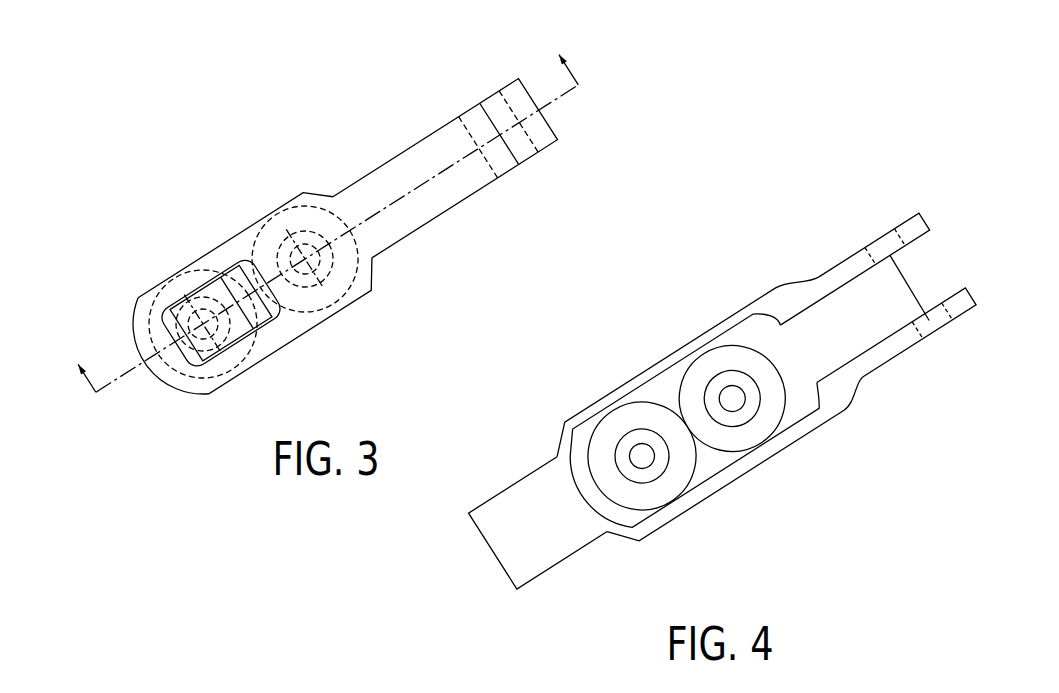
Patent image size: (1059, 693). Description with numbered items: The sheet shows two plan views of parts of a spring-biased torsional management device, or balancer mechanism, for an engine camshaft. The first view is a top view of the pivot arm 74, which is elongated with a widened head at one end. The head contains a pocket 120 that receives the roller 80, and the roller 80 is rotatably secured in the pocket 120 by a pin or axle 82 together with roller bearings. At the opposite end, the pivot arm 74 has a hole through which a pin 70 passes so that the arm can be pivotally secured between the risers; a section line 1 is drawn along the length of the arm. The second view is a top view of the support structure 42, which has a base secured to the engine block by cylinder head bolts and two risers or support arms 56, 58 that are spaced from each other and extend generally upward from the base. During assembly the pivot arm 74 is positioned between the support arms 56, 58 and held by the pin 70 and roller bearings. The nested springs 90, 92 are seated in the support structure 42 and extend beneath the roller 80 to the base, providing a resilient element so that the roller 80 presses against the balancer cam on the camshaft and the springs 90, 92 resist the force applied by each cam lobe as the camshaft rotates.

In FIG. 3, the section line 1- 1 is at (323, 204).
In FIG. 4, the support structure 42 is at (575, 537).
In FIG. 4, the support arm 56 is at (838, 262).
In FIG. 4, the support arm 58 is at (913, 347).
In FIG. 3, the pin 70 is at (518, 163).
In FIG. 3, the pivot arm 74 is at (402, 167).
In FIG. 3, the roller 80 is at (215, 287).
In FIG. 3, the pin or axle 82 is at (240, 342).
In FIG. 3, the spring 90 is at (157, 295).
In FIG. 4, the spring 90 is at (625, 412).
In FIG. 3, the spring 92 is at (177, 357).
In FIG. 4, the spring 92 is at (662, 462).
In FIG. 3, the pocket 120 is at (197, 362).